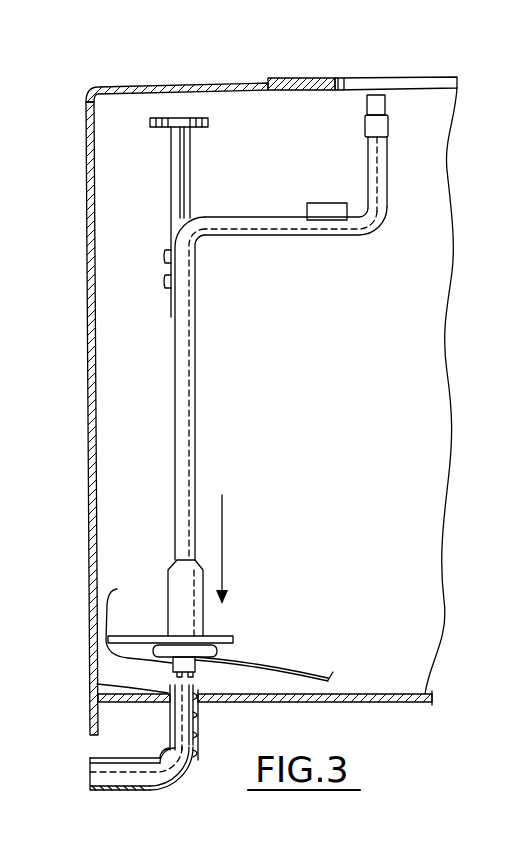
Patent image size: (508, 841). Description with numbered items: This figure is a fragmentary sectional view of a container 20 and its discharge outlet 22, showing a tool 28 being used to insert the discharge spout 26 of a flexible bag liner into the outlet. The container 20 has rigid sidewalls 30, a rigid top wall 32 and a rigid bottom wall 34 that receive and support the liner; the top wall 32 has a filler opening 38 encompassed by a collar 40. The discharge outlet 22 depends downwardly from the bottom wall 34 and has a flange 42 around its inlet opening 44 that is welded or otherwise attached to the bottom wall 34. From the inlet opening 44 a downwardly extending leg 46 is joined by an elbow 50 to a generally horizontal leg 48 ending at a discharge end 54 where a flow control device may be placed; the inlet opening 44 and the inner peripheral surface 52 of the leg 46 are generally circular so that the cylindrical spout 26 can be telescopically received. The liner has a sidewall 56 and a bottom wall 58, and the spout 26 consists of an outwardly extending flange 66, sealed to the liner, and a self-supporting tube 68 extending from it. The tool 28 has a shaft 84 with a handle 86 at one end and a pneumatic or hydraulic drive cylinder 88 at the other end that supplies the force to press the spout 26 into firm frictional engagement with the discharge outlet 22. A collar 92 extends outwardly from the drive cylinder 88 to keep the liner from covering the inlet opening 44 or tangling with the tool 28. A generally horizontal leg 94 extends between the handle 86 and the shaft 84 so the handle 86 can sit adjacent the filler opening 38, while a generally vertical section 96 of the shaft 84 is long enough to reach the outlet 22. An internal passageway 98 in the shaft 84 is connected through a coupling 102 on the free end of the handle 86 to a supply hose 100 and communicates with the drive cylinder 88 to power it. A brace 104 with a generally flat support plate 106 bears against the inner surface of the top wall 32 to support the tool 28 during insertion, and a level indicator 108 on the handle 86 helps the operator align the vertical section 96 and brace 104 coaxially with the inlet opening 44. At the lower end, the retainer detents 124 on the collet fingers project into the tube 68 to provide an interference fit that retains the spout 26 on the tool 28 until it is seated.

The container 20 is at (80, 180).
The discharge outlet 22 is at (150, 758).
The discharge spout 26 is at (212, 652).
The tool 28 is at (263, 562).
The sidewalls 30 is at (87, 262).
The top wall 32 is at (149, 86).
The bottom wall 34 is at (404, 702).
The filler opening 38 is at (338, 78).
The collar 40 is at (278, 80).
The flange 42 is at (96, 683).
The inlet opening 44 is at (200, 713).
The downwardly extending leg 46 is at (170, 712).
The horizontal leg 48 is at (117, 760).
The elbow 50 is at (176, 787).
The inner peripheral surface 52 is at (187, 786).
The discharge end 54 is at (95, 772).
The sidewall 56 is at (108, 597).
The bottom wall 58 is at (330, 680).
The flange 66 is at (222, 655).
The tube 68 is at (248, 665).
The shaft 84 is at (304, 348).
The handle 86 is at (388, 160).
The drive cylinder 88 is at (166, 564).
The collar 92 is at (127, 636).
The horizontal leg 94 is at (256, 216).
The vertical section 96 is at (194, 362).
The internal passageway 98 is at (190, 300).
The supply hose 100 is at (380, 98).
The coupling 102 is at (366, 125).
The brace 104 is at (170, 150).
The support plate 106 is at (208, 121).
The level indicator 108 is at (320, 204).
The retainer detent 124 is at (177, 680).